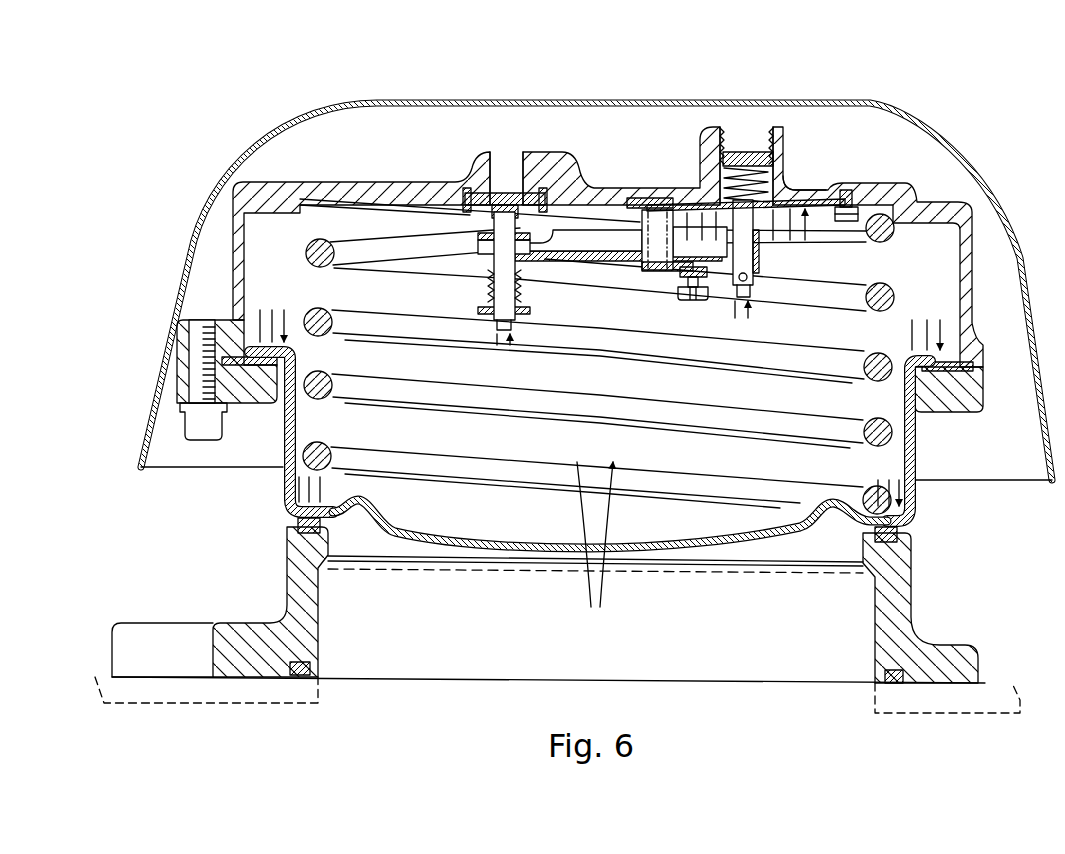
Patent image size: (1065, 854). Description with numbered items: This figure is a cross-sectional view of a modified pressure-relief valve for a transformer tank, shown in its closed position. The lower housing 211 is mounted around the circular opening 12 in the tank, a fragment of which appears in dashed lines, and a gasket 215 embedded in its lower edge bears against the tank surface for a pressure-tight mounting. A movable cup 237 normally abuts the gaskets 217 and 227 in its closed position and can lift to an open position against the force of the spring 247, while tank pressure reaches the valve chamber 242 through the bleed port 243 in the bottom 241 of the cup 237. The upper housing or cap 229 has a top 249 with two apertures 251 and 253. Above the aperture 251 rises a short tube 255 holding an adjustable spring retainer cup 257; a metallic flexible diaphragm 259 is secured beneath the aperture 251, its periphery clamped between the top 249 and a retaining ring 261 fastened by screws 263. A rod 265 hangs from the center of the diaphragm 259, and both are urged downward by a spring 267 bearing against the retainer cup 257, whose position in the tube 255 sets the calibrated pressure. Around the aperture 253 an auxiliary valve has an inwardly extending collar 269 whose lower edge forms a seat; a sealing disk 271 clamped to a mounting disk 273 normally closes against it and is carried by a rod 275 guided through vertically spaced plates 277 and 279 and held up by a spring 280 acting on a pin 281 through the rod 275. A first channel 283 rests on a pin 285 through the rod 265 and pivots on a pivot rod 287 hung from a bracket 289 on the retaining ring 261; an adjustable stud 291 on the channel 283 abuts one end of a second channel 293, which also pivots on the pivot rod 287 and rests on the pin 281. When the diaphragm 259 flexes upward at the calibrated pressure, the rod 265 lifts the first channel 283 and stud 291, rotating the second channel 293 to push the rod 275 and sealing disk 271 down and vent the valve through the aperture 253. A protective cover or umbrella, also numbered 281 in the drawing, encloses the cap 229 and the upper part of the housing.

The circular aperture 12 is at (324, 697).
The lower housing 211 is at (313, 598).
The gasket 215 is at (319, 661).
The gasket 217 is at (298, 524).
The gasket 227 is at (980, 338).
The upper housing or cap 229 is at (242, 271).
The cup 237 is at (296, 424).
The bottom of the cup 241 is at (513, 540).
The valve chamber 242 is at (598, 368).
The bleed port 243 is at (609, 539).
The spring 247 is at (861, 428).
The top 249 is at (366, 182).
The aperture 251 is at (781, 195).
The aperture 253 is at (516, 160).
The short tube 255 is at (786, 140).
The spring retainer cup 257 is at (729, 150).
The metallic flexible diaphragm 259 is at (768, 214).
The retaining ring 261 is at (848, 205).
The screws 263 is at (853, 222).
The rod 265 is at (759, 262).
The spring 267 is at (733, 184).
The collar 269 is at (466, 198).
The sealing disk 271 is at (467, 207).
The mounting disk 273 is at (545, 211).
The rod 275 is at (492, 318).
The guide plate 277 is at (482, 237).
The guide plate 279 is at (482, 311).
The spring 280 is at (488, 283).
The pin 281 is at (284, 121).
The first channel 283 is at (655, 270).
The pin 285 is at (752, 278).
The pivot rod 287 is at (652, 243).
The bracket 289 is at (635, 208).
The stud 291 is at (696, 290).
The second channel 293 is at (590, 261).